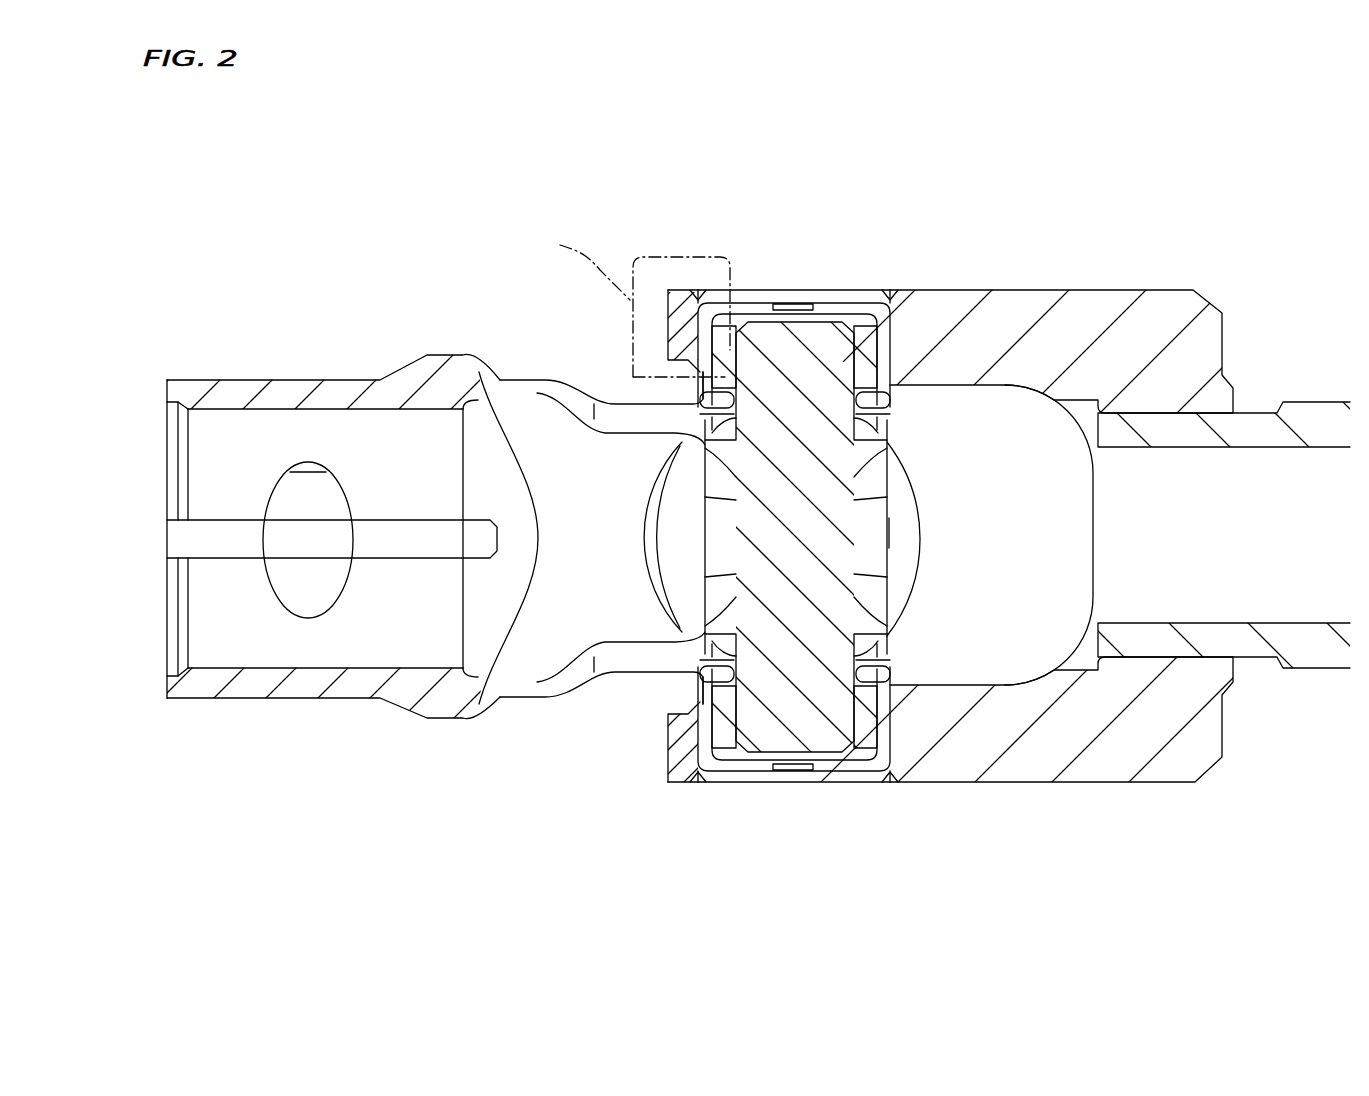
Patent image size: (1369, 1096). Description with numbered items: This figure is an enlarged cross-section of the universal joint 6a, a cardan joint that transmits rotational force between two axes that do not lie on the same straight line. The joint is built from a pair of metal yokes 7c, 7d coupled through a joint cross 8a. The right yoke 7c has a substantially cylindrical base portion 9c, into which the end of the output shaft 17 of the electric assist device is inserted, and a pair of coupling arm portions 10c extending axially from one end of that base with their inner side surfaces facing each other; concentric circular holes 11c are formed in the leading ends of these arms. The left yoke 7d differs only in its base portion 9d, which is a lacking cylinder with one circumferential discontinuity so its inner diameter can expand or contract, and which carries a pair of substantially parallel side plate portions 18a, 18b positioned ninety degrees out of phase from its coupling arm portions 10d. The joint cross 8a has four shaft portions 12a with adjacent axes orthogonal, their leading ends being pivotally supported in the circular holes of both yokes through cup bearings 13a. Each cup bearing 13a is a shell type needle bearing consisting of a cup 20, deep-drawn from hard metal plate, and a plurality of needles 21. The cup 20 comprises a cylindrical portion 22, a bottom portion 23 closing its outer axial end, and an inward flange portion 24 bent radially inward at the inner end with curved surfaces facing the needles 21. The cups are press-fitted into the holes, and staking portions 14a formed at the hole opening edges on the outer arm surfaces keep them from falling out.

The universal joint 6a is at (737, 548).
The yoke 7c is at (1088, 312).
The yoke 7d is at (290, 398).
The joint cross 8a is at (773, 317).
The base portion 9c is at (1167, 320).
The base portion 9d is at (358, 396).
The coupling arm portion 10c is at (950, 312).
The coupling arm portion 10d is at (607, 603).
The circular hole 11c is at (892, 307).
The shaft portion 12a is at (787, 320).
The cup bearing 13a is at (747, 320).
The staking portion 14a is at (702, 320).
The output shaft 17 is at (1307, 425).
The side plate portion 18a is at (205, 385).
The side plate portion 18b is at (215, 680).
The cup 20 is at (848, 307).
The needle 21 is at (723, 370).
The cylindrical portion 22 is at (667, 320).
The bottom portion 23 is at (822, 310).
The inward flange portion 24 is at (870, 413).